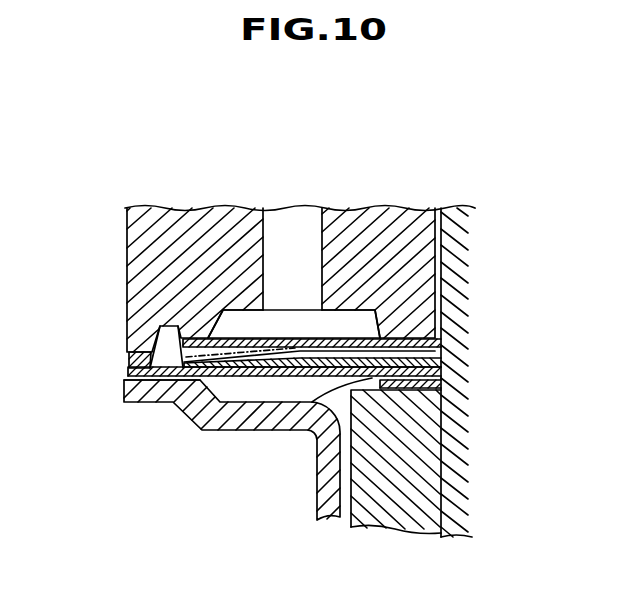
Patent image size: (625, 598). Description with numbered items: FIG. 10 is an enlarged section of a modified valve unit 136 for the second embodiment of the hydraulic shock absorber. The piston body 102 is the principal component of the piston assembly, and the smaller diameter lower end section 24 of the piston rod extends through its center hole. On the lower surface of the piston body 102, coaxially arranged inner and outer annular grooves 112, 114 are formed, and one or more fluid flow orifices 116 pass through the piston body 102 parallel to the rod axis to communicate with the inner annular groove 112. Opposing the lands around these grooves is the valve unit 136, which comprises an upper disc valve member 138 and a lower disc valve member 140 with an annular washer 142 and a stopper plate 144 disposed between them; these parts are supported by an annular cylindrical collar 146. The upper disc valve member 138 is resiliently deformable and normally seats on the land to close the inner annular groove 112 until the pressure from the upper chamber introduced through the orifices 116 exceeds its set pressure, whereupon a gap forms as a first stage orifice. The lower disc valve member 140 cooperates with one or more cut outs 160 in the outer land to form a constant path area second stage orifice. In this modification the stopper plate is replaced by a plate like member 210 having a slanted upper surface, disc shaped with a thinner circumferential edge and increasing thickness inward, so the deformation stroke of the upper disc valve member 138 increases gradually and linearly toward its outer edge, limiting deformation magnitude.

The lower end section 24 is at (458, 473).
The piston body 102 is at (438, 250).
The inner annular groove 112 is at (226, 327).
The outer annular groove 114 is at (160, 334).
The fluid flow orifice 116 is at (278, 233).
The valve unit 136 is at (175, 384).
The upper disc valve member 138 is at (414, 336).
The lower disc valve member 140 is at (443, 380).
The annular washer 142 is at (449, 350).
The stopper plate 144 is at (287, 430).
The annular cylindrical collar 146 is at (430, 425).
The cut out 160 is at (120, 364).
The plate like member 210 is at (443, 357).